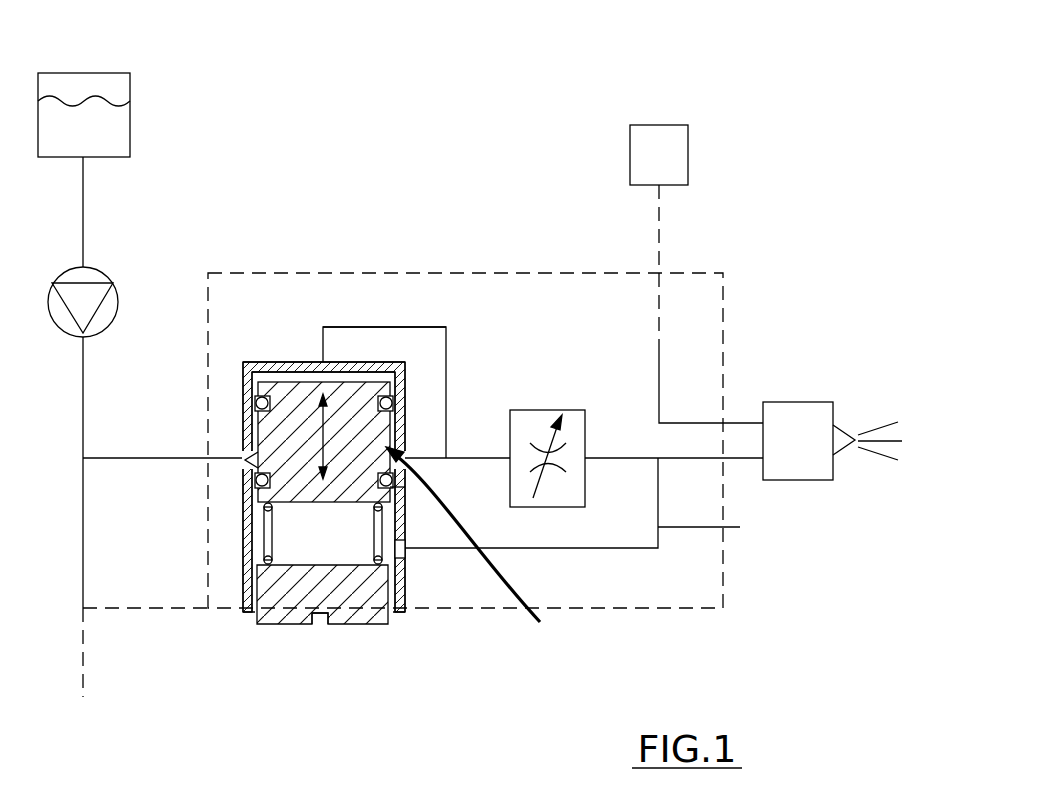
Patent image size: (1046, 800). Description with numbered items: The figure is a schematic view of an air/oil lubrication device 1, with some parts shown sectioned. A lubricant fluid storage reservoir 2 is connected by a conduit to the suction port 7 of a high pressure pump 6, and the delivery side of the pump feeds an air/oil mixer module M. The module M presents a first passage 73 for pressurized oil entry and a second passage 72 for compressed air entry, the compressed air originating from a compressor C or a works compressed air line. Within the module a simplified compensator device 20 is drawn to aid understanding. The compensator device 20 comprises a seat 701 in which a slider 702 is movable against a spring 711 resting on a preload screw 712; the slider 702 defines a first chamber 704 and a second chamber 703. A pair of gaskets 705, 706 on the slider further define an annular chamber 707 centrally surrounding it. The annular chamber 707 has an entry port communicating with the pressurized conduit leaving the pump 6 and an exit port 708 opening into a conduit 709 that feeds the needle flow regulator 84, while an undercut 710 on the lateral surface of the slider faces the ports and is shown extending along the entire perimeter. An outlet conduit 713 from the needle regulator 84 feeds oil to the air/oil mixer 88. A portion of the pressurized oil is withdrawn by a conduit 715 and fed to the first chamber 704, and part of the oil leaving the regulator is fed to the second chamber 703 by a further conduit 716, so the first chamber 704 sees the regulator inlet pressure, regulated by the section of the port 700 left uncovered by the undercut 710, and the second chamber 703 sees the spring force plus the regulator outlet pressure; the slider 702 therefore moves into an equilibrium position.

The air/oil lubrication device 1 is at (232, 632).
The lubricant fluid storage reservoir 2 is at (112, 130).
The high pressure pump 6 is at (108, 308).
The suction port 7 is at (83, 263).
The compensator device 20 is at (408, 588).
The second passage 72 is at (660, 233).
The first passage 73 is at (153, 457).
The needle flow regulator 84 is at (565, 488).
The air/oil mixer 88 is at (778, 400).
The port 700 is at (243, 452).
The seat 701 is at (257, 360).
The slider 702 is at (343, 433).
The second chamber 703 is at (318, 538).
The first chamber 704 is at (315, 377).
The gasket 705 is at (396, 397).
The gasket 706 is at (465, 460).
The annular chamber 707 is at (247, 461).
The exit port 708 is at (398, 448).
The conduit 709 is at (398, 488).
The undercut 710 is at (477, 551).
The spring 711 is at (268, 540).
The preload screw 712 is at (372, 598).
The outlet conduit 713 is at (612, 456).
The conduit 715 is at (330, 330).
The further conduit 716 is at (740, 527).
The air/oil mixer module M is at (280, 273).
The compressor C is at (658, 155).